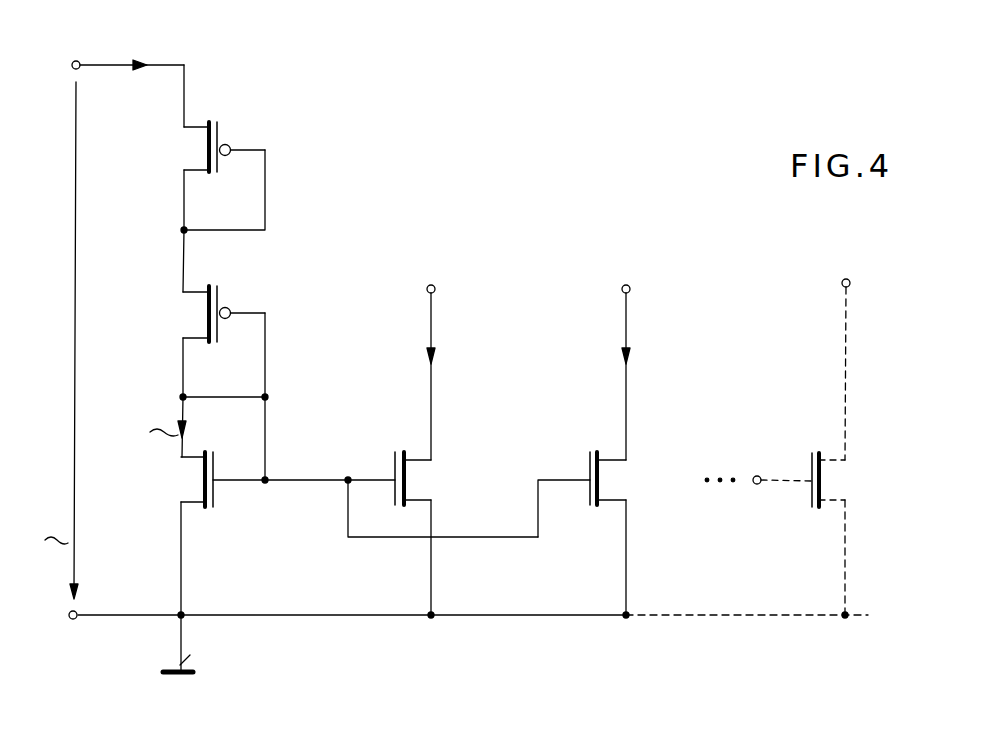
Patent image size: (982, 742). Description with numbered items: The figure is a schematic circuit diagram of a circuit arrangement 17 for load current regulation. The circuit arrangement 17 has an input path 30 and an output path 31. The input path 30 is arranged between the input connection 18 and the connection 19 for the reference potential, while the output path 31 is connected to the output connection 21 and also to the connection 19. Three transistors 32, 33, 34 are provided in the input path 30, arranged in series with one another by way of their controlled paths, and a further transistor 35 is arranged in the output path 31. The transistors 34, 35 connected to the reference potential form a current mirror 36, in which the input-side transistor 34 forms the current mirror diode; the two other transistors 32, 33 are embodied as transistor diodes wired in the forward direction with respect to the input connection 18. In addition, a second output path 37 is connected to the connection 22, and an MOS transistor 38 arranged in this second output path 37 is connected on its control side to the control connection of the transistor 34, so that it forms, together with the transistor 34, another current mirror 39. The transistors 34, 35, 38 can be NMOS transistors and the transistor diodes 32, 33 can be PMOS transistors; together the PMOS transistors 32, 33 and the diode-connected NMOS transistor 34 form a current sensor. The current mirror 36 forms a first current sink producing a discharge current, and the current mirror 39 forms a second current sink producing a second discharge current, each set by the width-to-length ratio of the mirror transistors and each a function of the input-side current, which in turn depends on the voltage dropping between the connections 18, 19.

The circuit arrangement 17 is at (583, 173).
The input connection 18 is at (75, 47).
The connection for the reference potential GND 19 is at (73, 626).
The output connection 21 is at (438, 283).
The connection 22 is at (632, 283).
The input path 30 is at (147, 381).
The output path 31 is at (502, 381).
The transistor 32 is at (200, 151).
The transistor 33 is at (197, 312).
The transistor 34 is at (199, 483).
The transistor 35 is at (410, 478).
The current mirror 36 is at (335, 526).
The second output path 37 is at (605, 381).
The MOS transistor 38 is at (612, 480).
The current mirror 39 is at (530, 526).